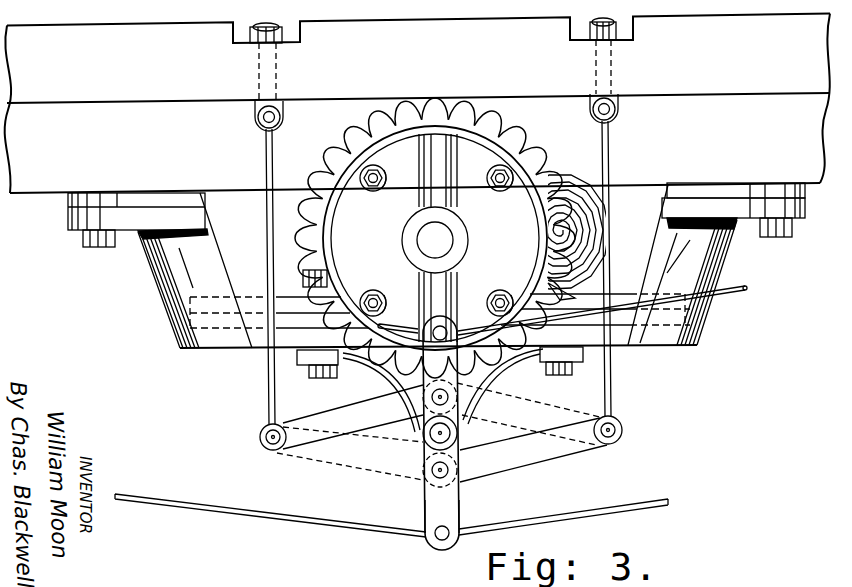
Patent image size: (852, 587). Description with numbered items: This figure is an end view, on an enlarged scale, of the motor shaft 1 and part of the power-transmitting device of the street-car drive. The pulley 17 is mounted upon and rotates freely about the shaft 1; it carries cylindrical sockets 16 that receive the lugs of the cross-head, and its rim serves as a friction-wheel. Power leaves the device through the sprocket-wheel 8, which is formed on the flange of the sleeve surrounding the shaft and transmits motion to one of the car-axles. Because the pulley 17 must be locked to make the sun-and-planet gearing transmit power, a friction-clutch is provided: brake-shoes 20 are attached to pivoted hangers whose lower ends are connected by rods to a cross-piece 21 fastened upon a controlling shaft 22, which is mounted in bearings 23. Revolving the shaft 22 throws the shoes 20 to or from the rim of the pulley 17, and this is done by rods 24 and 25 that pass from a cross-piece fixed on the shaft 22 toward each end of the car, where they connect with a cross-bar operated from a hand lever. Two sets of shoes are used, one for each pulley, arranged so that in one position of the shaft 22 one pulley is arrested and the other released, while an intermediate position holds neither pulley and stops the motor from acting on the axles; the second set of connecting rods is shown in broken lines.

The shaft 1 is at (445, 243).
The sprocket-wheel 8 is at (503, 135).
The cylindrical sockets 16 is at (432, 153).
The pulley 17 is at (435, 238).
The brake-shoes 20 is at (578, 170).
The cross-piece 21 is at (467, 437).
The shaft 22 is at (433, 437).
The bearings 23 is at (493, 381).
The rod 24 is at (398, 326).
The rod 25 is at (391, 516).